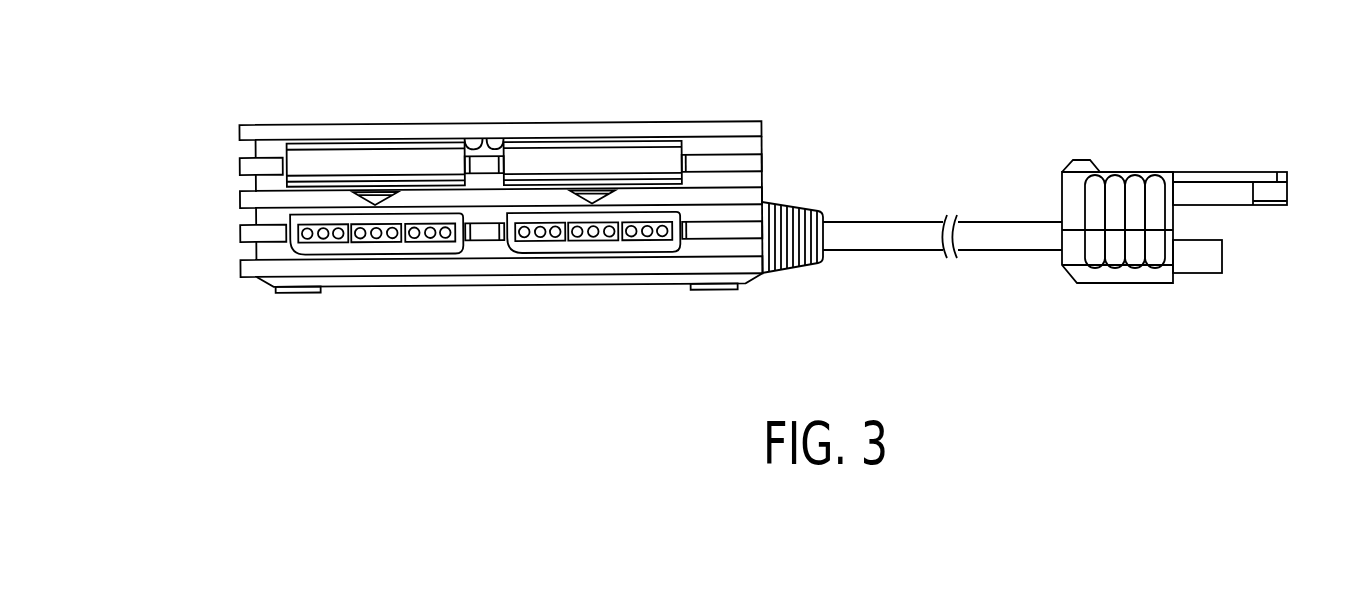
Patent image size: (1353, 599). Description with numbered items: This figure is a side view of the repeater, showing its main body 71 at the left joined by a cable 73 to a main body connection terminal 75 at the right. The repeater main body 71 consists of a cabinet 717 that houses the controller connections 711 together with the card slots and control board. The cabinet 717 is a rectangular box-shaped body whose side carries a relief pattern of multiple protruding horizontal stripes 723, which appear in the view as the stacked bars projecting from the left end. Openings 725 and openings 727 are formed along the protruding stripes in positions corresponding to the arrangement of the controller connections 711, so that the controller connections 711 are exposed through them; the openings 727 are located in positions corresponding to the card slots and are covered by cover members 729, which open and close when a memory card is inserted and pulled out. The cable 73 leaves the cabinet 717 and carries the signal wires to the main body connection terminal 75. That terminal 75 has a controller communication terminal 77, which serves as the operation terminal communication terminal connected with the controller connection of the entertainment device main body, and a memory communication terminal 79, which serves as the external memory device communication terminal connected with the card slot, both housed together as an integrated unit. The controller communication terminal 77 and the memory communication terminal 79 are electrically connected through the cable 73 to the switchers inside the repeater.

The main body 71 is at (725, 128).
The cabinet 717 is at (252, 131).
The protruding horizontal stripes 723 is at (247, 266).
The cover members 729 is at (329, 166).
The openings 727 is at (477, 150).
The openings 725 is at (458, 252).
The controller connections 711 is at (374, 239).
The cable 73 is at (882, 232).
The main body connection terminal 75 is at (1128, 183).
The controller communication terminal 77 is at (1212, 256).
The memory communication terminal 79 is at (1277, 190).